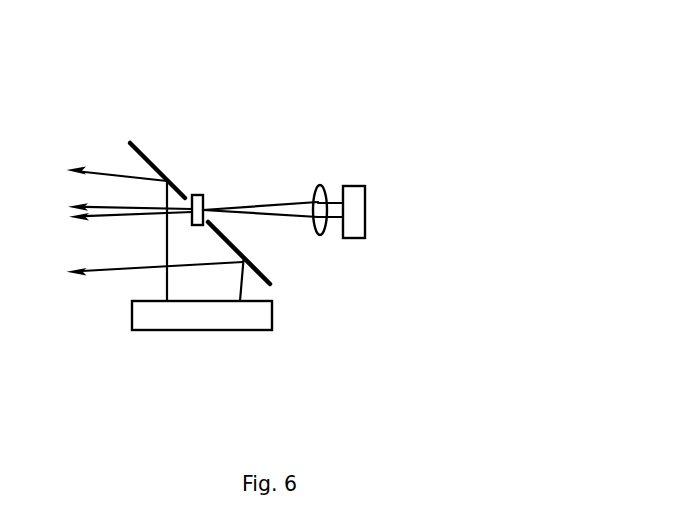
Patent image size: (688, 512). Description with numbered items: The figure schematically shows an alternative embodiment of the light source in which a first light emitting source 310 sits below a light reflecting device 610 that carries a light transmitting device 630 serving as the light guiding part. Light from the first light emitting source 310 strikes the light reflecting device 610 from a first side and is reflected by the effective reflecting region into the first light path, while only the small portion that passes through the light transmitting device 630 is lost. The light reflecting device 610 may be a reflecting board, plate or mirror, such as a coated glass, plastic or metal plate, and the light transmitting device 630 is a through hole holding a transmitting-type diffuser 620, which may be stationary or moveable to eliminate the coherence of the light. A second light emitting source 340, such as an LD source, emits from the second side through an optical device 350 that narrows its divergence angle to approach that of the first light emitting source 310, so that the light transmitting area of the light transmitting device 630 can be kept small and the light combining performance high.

The first light emitting source 310 is at (195, 322).
The second light emitting source 340 is at (353, 238).
The optical device 350 is at (320, 185).
The light reflecting device 610 is at (137, 145).
The transmitting-type diffuser 620 is at (197, 195).
The light transmitting device 630 is at (211, 198).